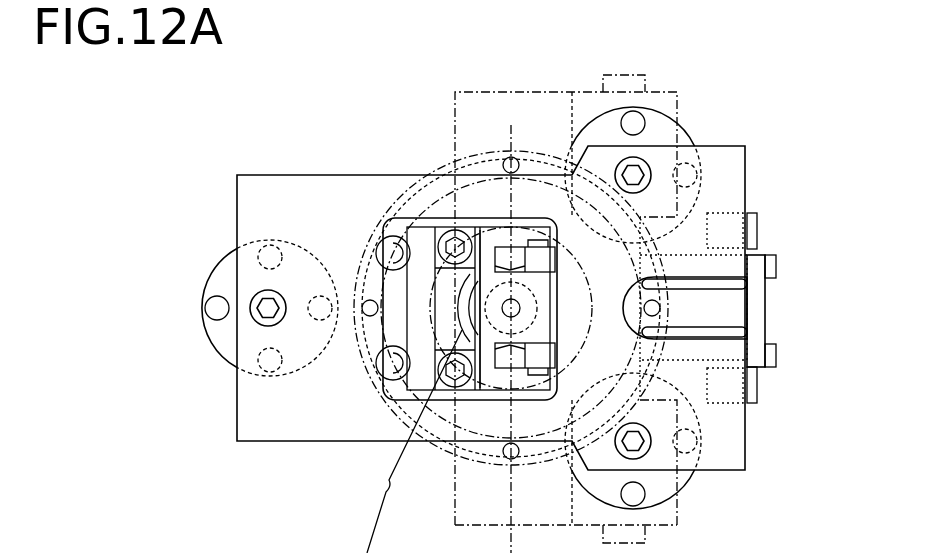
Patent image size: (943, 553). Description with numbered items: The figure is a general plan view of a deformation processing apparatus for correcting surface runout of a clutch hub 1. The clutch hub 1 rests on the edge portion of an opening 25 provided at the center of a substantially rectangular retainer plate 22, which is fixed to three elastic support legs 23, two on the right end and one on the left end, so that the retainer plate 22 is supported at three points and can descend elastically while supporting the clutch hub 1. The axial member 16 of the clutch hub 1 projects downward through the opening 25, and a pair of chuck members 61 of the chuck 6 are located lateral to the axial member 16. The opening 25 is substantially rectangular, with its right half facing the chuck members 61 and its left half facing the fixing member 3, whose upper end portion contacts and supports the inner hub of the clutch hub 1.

The clutch hub 1 is at (383, 218).
The fixing member 3 is at (448, 327).
The chuck 6 is at (787, 310).
The axial member 16 is at (493, 337).
The retainer plate 22 is at (298, 442).
The elastic support legs 23 is at (212, 353).
The opening 25 is at (450, 217).
The chuck members 61 is at (533, 353).